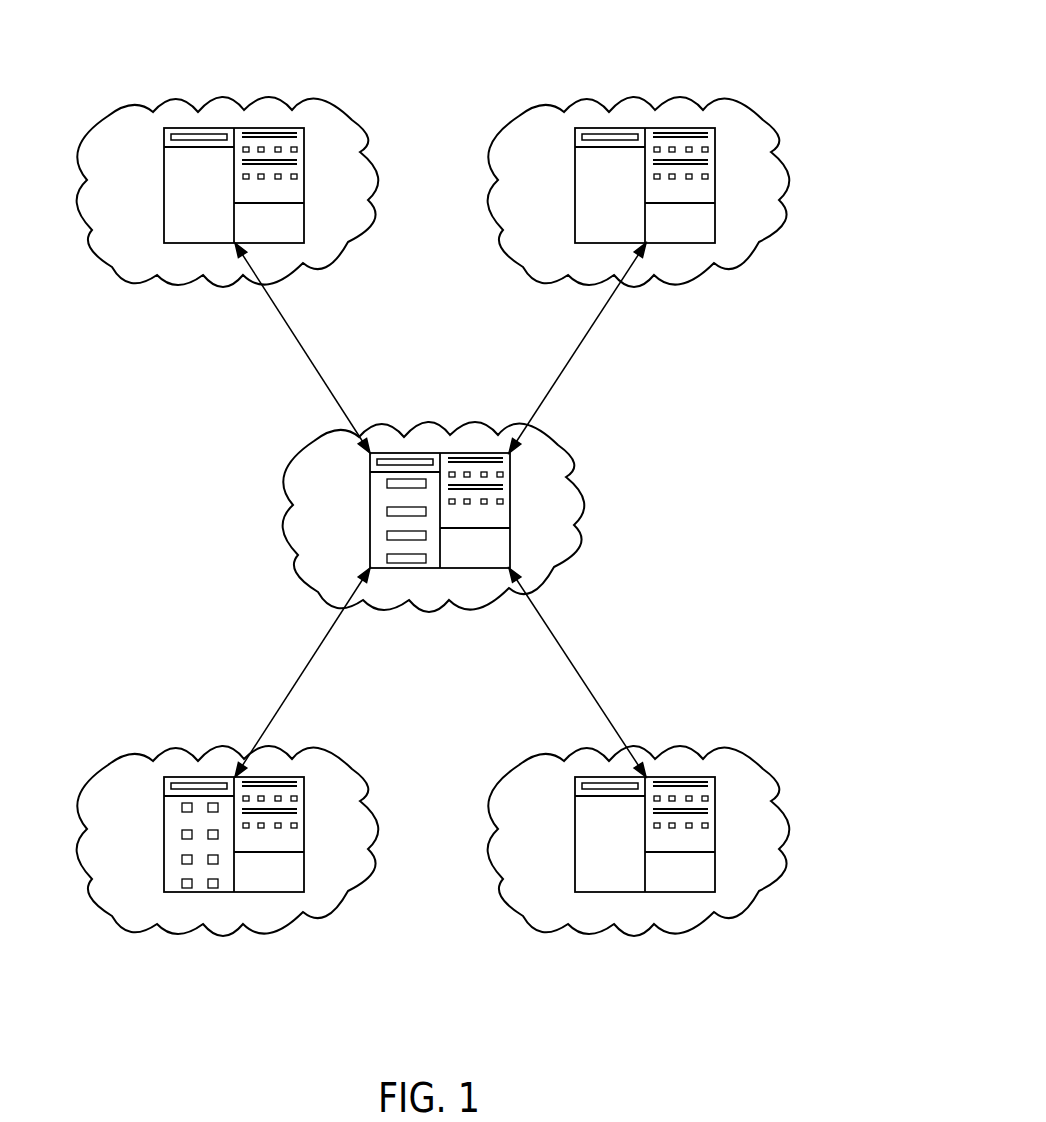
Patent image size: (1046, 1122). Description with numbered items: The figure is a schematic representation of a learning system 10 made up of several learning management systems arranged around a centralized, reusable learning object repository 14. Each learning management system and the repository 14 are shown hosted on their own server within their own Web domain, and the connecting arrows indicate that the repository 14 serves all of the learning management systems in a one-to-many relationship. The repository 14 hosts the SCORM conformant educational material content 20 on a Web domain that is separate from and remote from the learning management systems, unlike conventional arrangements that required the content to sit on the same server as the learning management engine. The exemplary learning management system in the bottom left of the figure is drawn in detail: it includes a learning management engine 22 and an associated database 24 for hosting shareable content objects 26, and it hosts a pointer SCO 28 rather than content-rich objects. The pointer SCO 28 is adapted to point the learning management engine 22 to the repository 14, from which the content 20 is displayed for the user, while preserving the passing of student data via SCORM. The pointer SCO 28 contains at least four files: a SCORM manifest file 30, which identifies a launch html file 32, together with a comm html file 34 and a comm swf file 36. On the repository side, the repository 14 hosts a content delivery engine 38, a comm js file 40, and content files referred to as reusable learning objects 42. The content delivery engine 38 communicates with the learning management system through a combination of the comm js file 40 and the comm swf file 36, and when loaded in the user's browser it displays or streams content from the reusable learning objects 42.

The learning system 10 is at (735, 526).
The reusable learning object repository 14 is at (588, 425).
The SCORM conformant educational material content 20 is at (387, 483).
The learning management engine 22 is at (182, 807).
The database 24 is at (182, 834).
The shareable content object 26 is at (182, 859).
The pointer SCO 28 is at (182, 883).
The SCORM manifest file 30 is at (218, 807).
The launch html file 32 is at (218, 834).
The comm html file 34 is at (218, 859).
The comm swf file 36 is at (218, 883).
The content delivery engine 38 is at (387, 511).
The comm js file 40 is at (387, 535).
The reusable learning object 42 is at (387, 558).